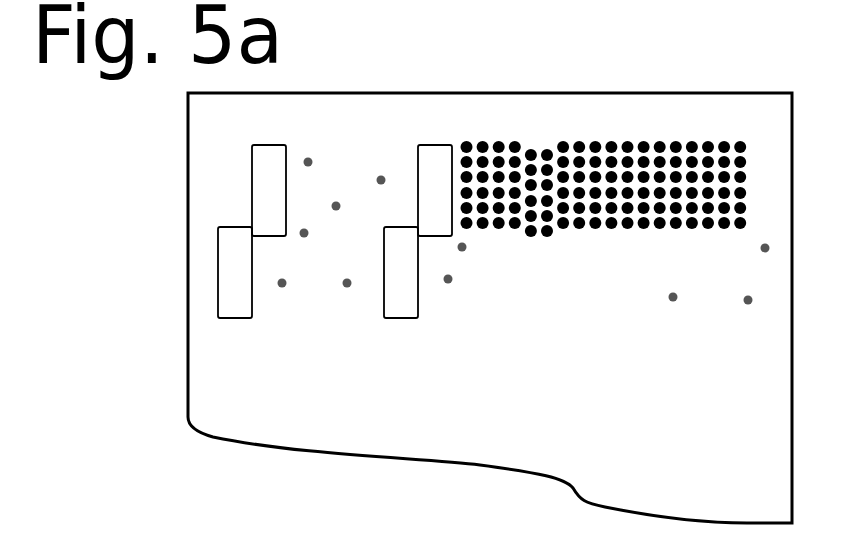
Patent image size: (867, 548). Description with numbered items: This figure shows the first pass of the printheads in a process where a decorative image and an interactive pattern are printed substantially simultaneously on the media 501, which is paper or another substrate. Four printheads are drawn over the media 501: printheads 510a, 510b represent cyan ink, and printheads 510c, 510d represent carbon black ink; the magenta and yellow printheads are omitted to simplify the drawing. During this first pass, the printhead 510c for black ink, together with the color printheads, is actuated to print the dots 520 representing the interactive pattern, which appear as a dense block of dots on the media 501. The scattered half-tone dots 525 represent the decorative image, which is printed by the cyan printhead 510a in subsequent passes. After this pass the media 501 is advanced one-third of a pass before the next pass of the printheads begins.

The media 501 is at (692, 93).
The printhead 510a is at (272, 236).
The printhead 510b is at (235, 318).
The printhead 510c is at (435, 236).
The printhead 510d is at (398, 318).
The dots 520 is at (676, 226).
The half-tone dots 525 is at (673, 300).